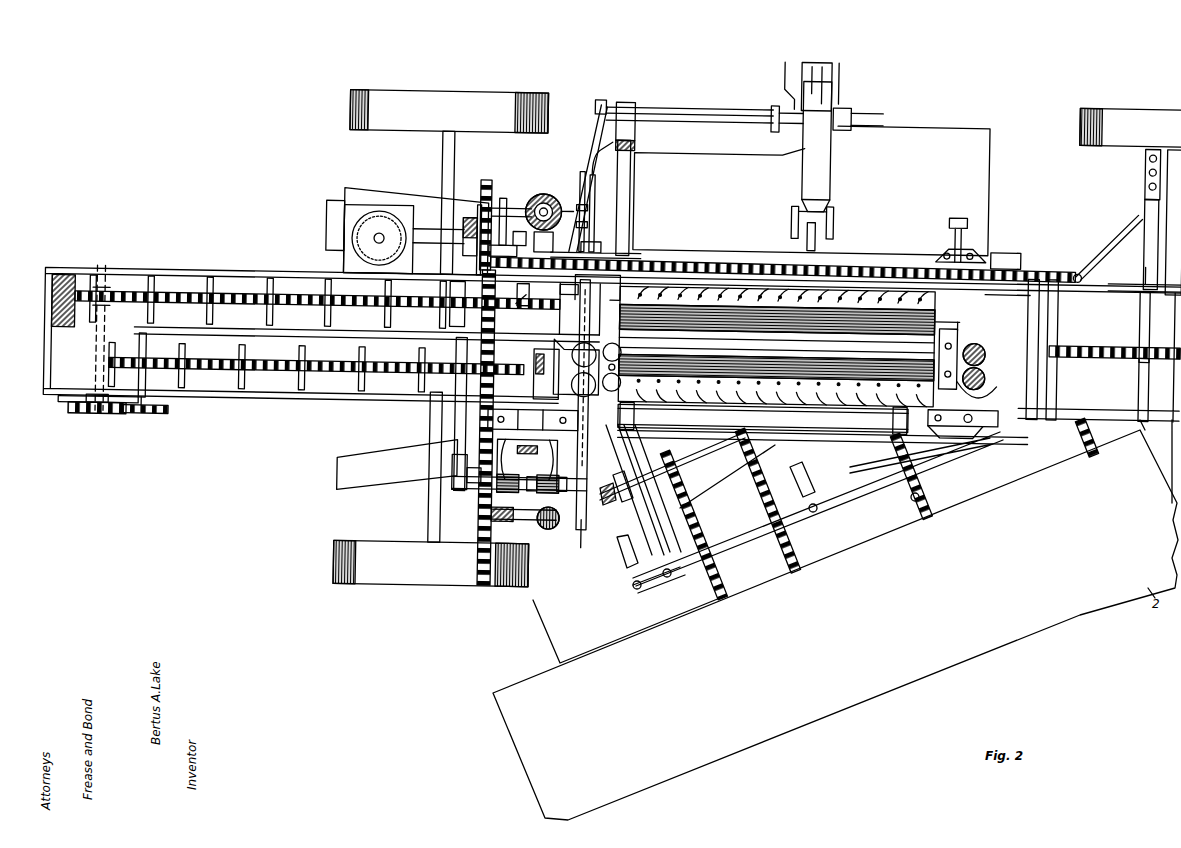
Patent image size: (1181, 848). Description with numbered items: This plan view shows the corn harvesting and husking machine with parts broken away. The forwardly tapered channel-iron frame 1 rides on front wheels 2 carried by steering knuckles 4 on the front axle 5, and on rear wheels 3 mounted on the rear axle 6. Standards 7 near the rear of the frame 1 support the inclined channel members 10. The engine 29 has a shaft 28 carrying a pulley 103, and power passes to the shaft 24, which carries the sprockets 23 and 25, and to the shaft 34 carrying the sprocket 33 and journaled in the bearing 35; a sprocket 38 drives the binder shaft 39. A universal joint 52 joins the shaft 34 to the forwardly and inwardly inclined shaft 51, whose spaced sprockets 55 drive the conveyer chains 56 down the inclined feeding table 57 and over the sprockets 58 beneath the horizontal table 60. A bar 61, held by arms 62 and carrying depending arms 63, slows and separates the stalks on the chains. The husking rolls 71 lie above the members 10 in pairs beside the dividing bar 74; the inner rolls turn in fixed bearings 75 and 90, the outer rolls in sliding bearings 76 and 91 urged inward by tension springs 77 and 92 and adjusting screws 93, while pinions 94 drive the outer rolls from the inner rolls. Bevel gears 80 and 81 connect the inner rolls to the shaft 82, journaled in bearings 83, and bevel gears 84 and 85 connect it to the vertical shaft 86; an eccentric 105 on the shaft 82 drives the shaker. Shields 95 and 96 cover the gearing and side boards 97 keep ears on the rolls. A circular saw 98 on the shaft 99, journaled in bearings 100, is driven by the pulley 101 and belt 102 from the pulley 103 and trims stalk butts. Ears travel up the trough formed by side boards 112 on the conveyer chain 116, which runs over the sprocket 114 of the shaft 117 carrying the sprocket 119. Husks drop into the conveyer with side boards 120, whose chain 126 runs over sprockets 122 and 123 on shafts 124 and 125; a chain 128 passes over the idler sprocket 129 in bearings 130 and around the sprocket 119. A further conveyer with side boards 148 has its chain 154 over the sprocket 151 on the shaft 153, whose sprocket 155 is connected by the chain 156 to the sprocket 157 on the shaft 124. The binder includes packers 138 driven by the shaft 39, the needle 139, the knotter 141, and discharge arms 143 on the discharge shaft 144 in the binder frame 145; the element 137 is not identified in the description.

The frame 1 is at (350, 192).
The front wheels 2 is at (1124, 100).
The rear wheels 3 is at (470, 101).
The steering knuckles 4 is at (1143, 146).
The front axle 5 is at (1143, 246).
The rear axle 6 is at (433, 505).
The standards 7 is at (580, 450).
The inclined channel members 10 is at (870, 261).
The sprocket 23 is at (501, 200).
The shaft 24 is at (500, 200).
The sprocket 25 is at (485, 190).
The engine shaft 28 is at (418, 228).
The engine 29 is at (380, 228).
The sprocket 33 is at (486, 527).
The shaft 34 is at (528, 521).
The bearing 35 is at (532, 486).
The sprocket 38 is at (580, 205).
The binder shaft 39 is at (594, 203).
The inclined horizontal shaft 51 is at (608, 490).
The universal joint 52 is at (554, 530).
The sprockets 55 is at (700, 448).
The conveyer chains 56 is at (745, 486).
The inclined feeding table 57 is at (626, 615).
The sprockets 58 is at (907, 503).
The horizontal table 60 is at (835, 620).
The bar 61 is at (728, 532).
The arms 62 is at (630, 513).
The depending arms 63 is at (803, 478).
The husking rolls 71 is at (918, 300).
The dividing bar 74 is at (946, 327).
The bearings 75 is at (590, 328).
The bearings 76 is at (612, 343).
The tension springs 77 is at (589, 351).
The bevel gear 80 is at (555, 374).
The bevel gear 81 is at (571, 368).
The shaft 82 is at (580, 369).
The bearings 83 is at (533, 420).
The bevel gear 84 is at (562, 212).
The bevel gear 85 is at (548, 200).
The vertical shaft 86 is at (540, 195).
The bearings 90 is at (958, 345).
The sliding bearings 91 is at (986, 378).
The tension springs 92 is at (963, 423).
The adjusting screws 93 is at (957, 225).
The pinions 94 is at (986, 348).
The metal shield 95 is at (538, 320).
The shield 96 is at (1007, 302).
The vertical side boards 97 is at (975, 296).
The circular saw 98 is at (585, 540).
The shaft 99 is at (562, 490).
The bearings 100 is at (541, 493).
The pulley 101 is at (460, 490).
The belt 102 is at (457, 428).
The pulley 103 is at (466, 220).
The eccentric 105 is at (538, 452).
The side boards 112 is at (312, 390).
The sprocket 114 is at (148, 375).
The conveyer chain 116 is at (283, 378).
The shaft 117 is at (146, 385).
The sprocket 119 is at (150, 418).
The side boards 120 is at (235, 325).
The sprocket 122 is at (518, 305).
The sprocket 123 is at (106, 300).
The shaft 124 is at (535, 298).
The shaft 125 is at (100, 275).
The conveyer chain 126 is at (345, 318).
The chain 128 is at (95, 422).
The idler sprocket 129 is at (105, 414).
The bearings 130 is at (78, 418).
The box 137 is at (811, 189).
The packers 138 is at (790, 211).
The needle 139 is at (806, 236).
The knotter 141 is at (826, 152).
The discharge arms 143 is at (781, 66).
The discharge shaft 144 is at (848, 114).
The binder frame 145 is at (700, 110).
The side boards 148 is at (1138, 276).
The sprocket 151 is at (1075, 350).
The shaft 153 is at (1066, 312).
The conveyer chain 154 is at (1122, 340).
The sprocket 155 is at (1073, 268).
The chain 156 is at (700, 260).
The sprocket 157 is at (490, 277).